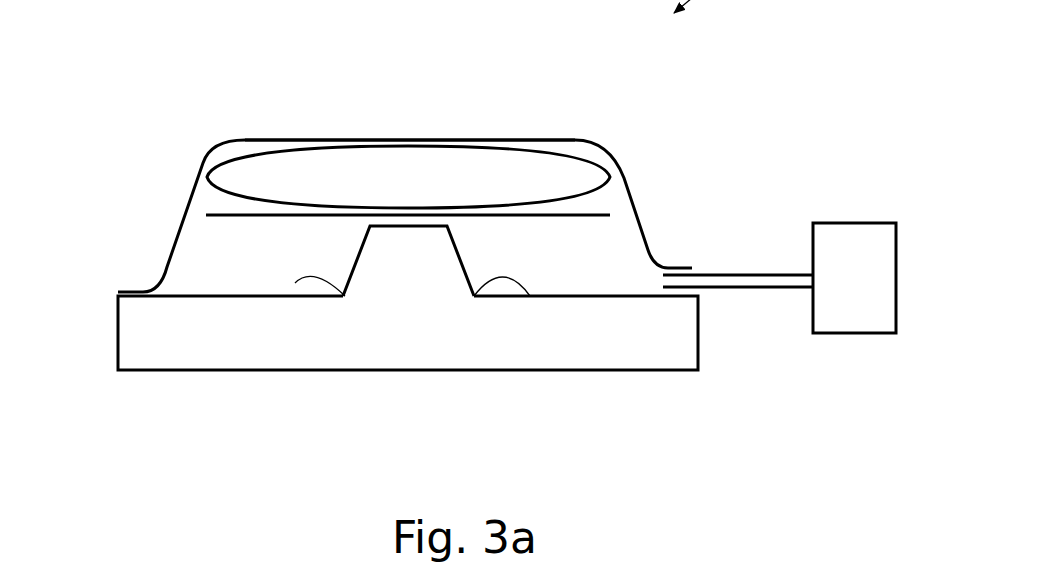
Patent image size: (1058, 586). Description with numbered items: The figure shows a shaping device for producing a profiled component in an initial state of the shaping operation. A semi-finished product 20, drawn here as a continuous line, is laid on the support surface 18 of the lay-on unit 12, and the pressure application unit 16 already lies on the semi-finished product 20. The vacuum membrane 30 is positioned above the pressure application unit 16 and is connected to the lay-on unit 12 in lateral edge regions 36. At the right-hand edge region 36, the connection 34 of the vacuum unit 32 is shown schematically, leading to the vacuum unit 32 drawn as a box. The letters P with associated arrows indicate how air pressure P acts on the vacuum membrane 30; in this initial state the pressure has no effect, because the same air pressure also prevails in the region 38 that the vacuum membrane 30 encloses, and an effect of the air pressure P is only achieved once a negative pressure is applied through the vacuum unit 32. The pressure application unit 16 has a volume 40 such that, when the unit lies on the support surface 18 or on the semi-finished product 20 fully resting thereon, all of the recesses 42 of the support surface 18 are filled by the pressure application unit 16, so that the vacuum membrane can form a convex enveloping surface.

The lay-on unit 12 is at (118, 358).
The pressure application unit 16 is at (255, 155).
The support surface 18 is at (180, 296).
The semi-finished product 20 is at (206, 216).
The vacuum membrane 30 is at (296, 140).
The vacuum unit 32 is at (886, 325).
The connection 34 is at (745, 288).
The lateral edge regions 36 is at (125, 291).
The region enclosing the vacuum membrane 38 is at (601, 288).
The volume 40 is at (406, 189).
The recesses of the support surface 42 is at (295, 283).
The air pressure P is at (578, 137).